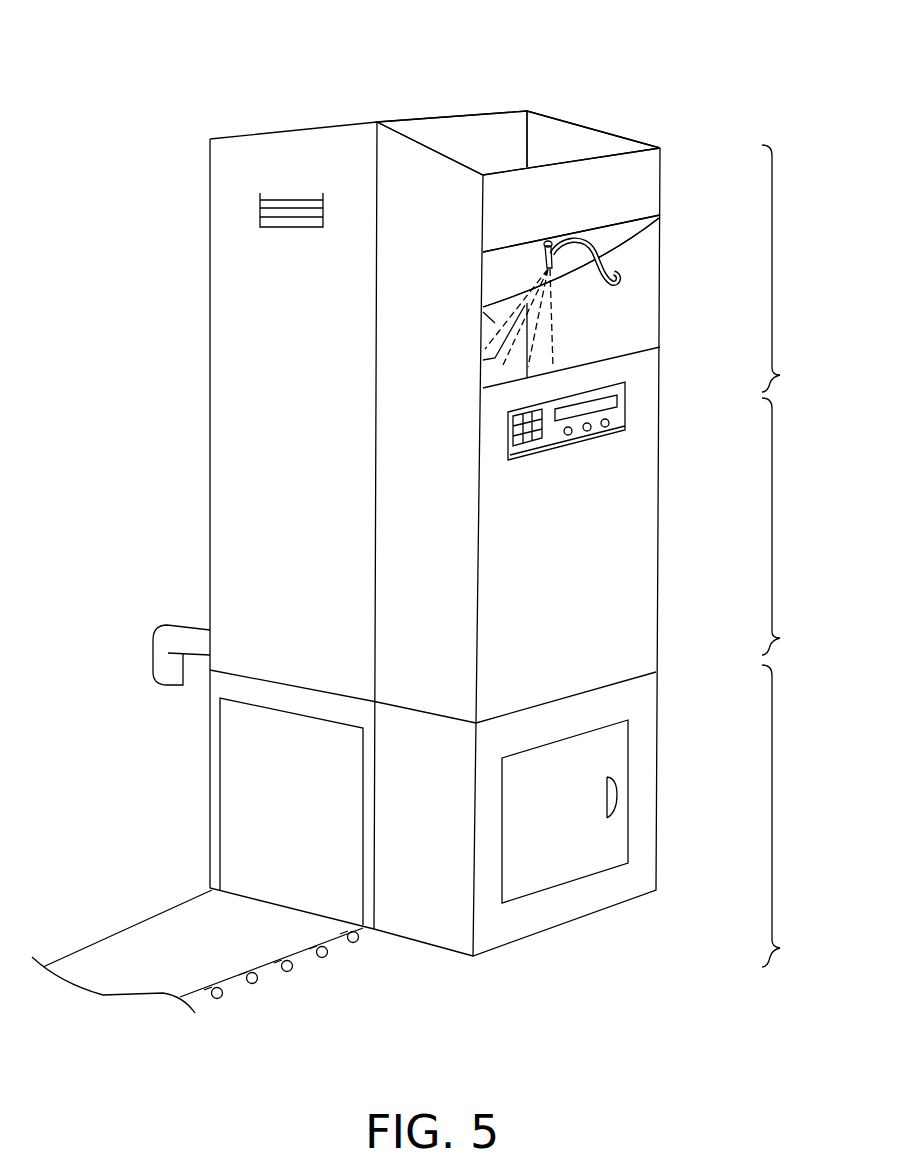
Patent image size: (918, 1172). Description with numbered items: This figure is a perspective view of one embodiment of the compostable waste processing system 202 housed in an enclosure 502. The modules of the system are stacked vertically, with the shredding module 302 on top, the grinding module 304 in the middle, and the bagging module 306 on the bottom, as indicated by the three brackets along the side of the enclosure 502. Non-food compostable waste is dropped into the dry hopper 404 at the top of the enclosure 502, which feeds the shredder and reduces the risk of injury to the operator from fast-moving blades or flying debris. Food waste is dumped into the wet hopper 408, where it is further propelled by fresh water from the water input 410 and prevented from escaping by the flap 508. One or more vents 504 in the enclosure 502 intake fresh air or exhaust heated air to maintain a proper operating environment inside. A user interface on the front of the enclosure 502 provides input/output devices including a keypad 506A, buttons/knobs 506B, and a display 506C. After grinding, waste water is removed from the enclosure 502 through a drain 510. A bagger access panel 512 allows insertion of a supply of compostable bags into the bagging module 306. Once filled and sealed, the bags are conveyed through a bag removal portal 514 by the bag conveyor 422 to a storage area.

The compostable waste processing system 202 is at (172, 100).
The shredding module 302 is at (798, 268).
The grinding module 304 is at (798, 526).
The bagging module 306 is at (798, 816).
The dry hopper 404 is at (582, 140).
The wet hopper 408 is at (640, 300).
The water input 410 is at (568, 240).
The conveyor 422 is at (150, 950).
The enclosure 502 is at (210, 468).
The vent 504 is at (260, 207).
The keypad 506A is at (525, 458).
The buttons/knobs 506B is at (607, 435).
The display 506C is at (612, 398).
The flap 508 is at (483, 310).
The drain 510 is at (163, 677).
The bagger access panel 512 is at (617, 768).
The bag removal portal 514 is at (252, 807).